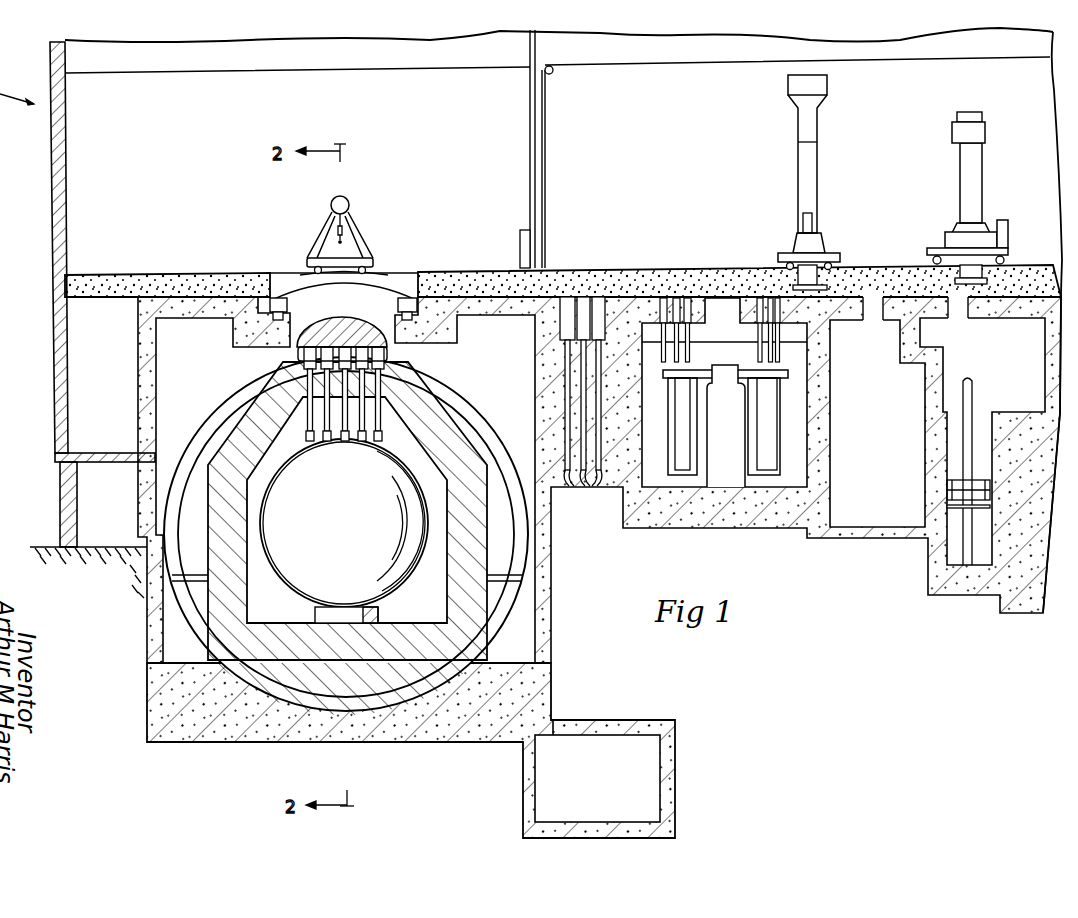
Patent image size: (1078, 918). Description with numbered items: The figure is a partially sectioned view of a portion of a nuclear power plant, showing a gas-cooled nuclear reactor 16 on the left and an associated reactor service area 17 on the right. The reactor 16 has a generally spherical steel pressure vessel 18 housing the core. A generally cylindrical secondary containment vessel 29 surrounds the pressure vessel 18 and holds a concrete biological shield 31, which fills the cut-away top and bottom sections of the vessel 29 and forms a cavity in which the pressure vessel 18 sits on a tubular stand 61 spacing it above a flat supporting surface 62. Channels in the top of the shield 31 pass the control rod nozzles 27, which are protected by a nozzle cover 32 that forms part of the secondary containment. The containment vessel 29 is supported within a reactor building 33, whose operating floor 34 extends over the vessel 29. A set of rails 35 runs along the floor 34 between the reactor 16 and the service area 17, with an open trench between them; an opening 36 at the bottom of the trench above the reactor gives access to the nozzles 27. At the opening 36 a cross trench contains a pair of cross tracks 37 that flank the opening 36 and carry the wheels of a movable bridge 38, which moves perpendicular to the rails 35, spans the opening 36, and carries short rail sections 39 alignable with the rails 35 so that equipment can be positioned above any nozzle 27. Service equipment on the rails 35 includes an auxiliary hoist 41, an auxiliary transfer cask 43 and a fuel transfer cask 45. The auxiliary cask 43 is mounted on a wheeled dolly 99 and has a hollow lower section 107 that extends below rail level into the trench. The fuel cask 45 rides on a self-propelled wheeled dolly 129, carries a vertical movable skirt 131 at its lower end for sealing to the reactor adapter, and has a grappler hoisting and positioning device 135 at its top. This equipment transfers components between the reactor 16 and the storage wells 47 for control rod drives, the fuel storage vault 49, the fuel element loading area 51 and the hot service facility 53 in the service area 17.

The gas-cooled nuclear reactor 16 is at (443, 364).
The reactor service area 17 is at (600, 252).
The spherical pressure vessel 18 is at (335, 506).
The control rod nozzles 27 is at (323, 418).
The secondary containment vessel 29 is at (215, 410).
The concrete biological shield 31 is at (215, 450).
The nozzle cover 32 is at (338, 318).
The reactor building 33 is at (56, 300).
The operating floor 34 is at (107, 274).
The rails 35 is at (688, 268).
The opening 36 is at (380, 290).
The cross tracks 37 is at (283, 298).
The movable bridge 38 is at (368, 282).
The short rail sections 39 is at (410, 300).
The auxiliary hoist 41 is at (355, 213).
The auxiliary transfer cask 43 is at (818, 160).
The fuel transfer cask 45 is at (985, 175).
The storage wells 47 is at (586, 484).
The fuel storage vault 49 is at (731, 362).
The fuel element loading area 51 is at (876, 389).
The hot service facility 53 is at (1006, 350).
The tubular stand 61 is at (380, 614).
The flat supporting surface 62 is at (276, 620).
The wheeled dolly 99 is at (840, 258).
The hollow lower section 107 is at (818, 277).
The self-propelled wheeled dolly 129 is at (1008, 251).
The vertical movable skirt 131 is at (987, 280).
The grappler hoisting and positioning device 135 is at (980, 130).